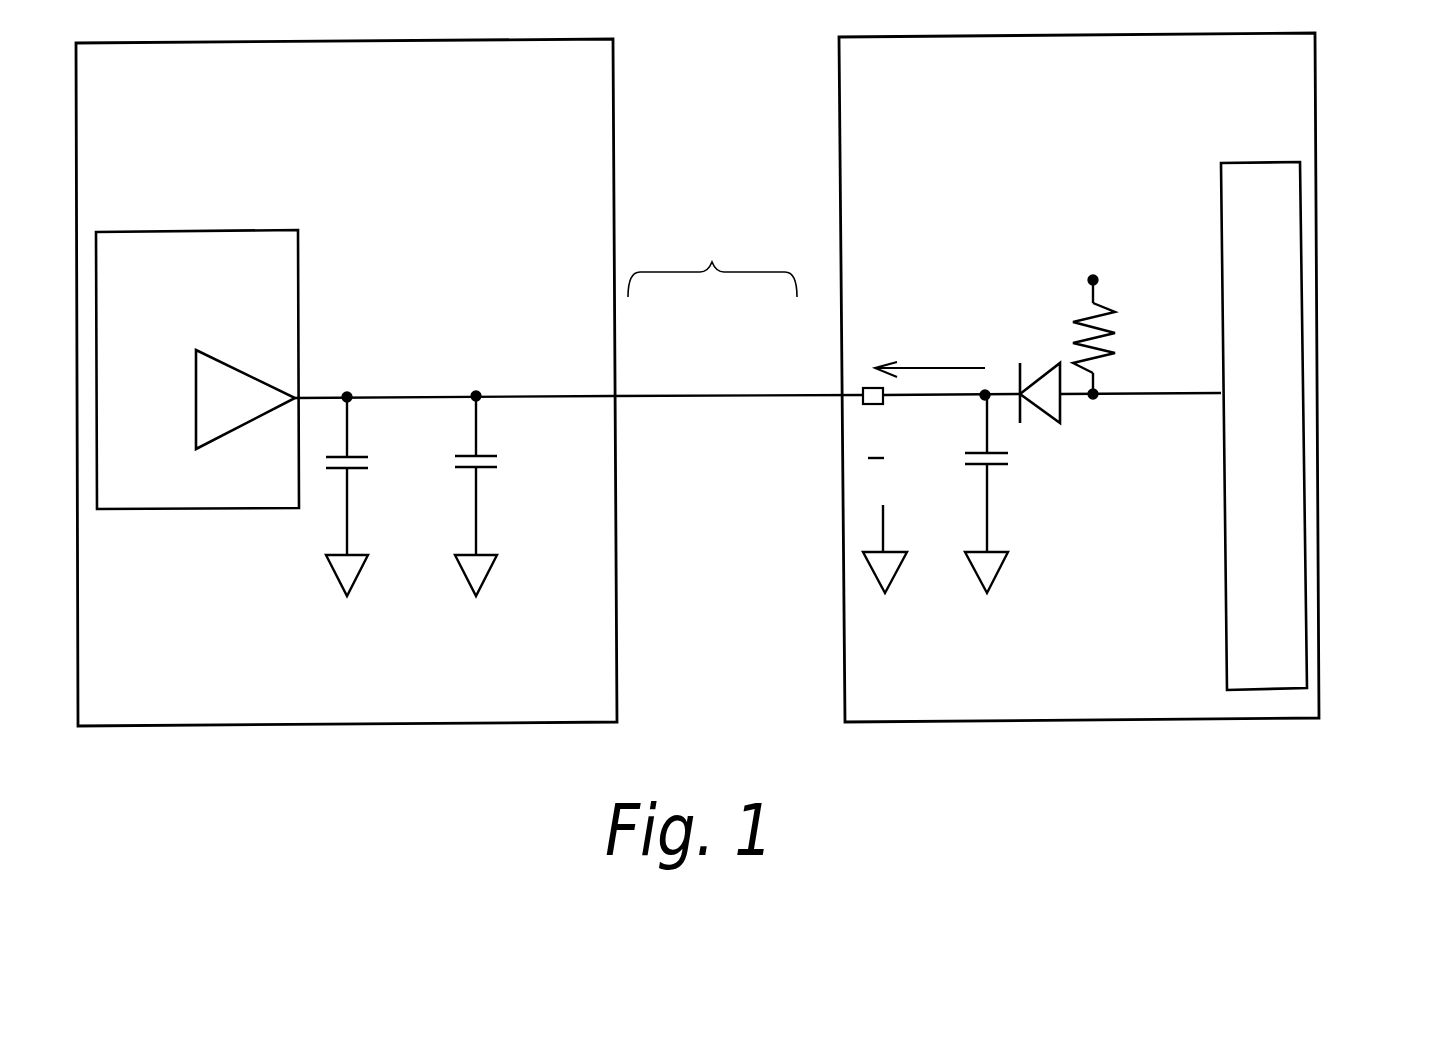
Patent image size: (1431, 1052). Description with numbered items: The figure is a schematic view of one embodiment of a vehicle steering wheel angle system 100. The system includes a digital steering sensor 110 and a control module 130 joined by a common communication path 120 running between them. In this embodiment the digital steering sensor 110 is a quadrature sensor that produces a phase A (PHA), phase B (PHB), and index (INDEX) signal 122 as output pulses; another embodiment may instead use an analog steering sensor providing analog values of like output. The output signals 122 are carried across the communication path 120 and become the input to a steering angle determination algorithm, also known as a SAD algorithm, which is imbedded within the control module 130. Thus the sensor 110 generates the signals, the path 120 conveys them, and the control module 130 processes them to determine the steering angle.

The vehicle steering wheel angle system 100 is at (1407, 241).
The digital steering sensor 110 is at (337, 683).
The communication path 120 is at (725, 474).
The signal 122 is at (712, 262).
The control module 130 is at (1100, 679).